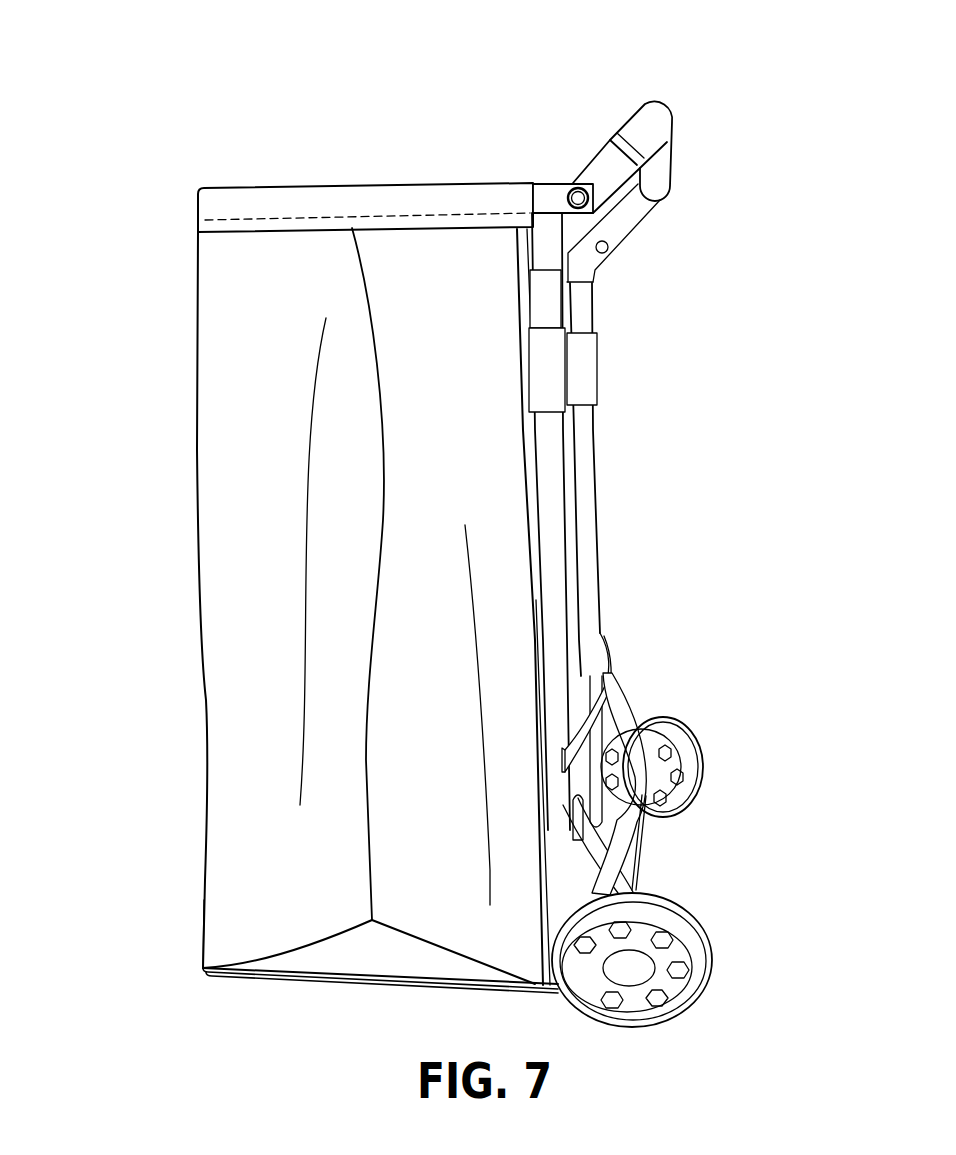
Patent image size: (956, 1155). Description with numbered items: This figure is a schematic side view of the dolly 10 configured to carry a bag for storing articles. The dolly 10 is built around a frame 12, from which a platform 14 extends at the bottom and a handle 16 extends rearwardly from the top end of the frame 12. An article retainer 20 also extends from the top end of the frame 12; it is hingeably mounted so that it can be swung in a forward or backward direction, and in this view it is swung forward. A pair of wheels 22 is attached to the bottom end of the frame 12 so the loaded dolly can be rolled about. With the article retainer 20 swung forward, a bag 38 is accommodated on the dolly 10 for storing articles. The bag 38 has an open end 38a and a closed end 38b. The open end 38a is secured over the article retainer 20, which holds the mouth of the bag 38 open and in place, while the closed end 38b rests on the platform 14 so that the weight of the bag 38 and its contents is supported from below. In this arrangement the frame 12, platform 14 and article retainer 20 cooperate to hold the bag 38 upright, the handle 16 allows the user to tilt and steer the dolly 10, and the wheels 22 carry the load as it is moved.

The dolly 10 is at (186, 122).
The frame 12 is at (598, 557).
The platform 14 is at (205, 968).
The handle 16 is at (642, 103).
The article retainer 20 is at (538, 184).
The wheels 22 is at (640, 718).
The bag 38 is at (228, 420).
The open end 38a is at (215, 208).
The closed end 38b is at (228, 922).